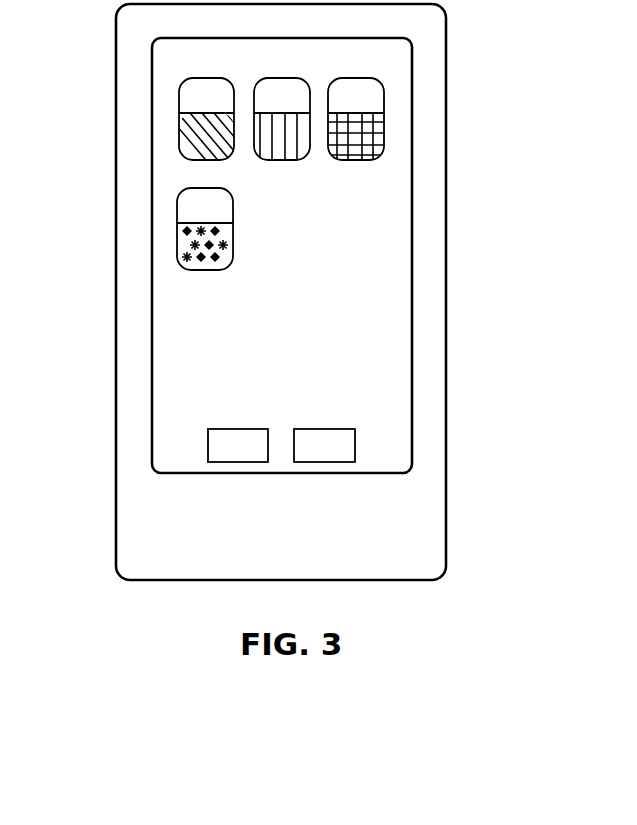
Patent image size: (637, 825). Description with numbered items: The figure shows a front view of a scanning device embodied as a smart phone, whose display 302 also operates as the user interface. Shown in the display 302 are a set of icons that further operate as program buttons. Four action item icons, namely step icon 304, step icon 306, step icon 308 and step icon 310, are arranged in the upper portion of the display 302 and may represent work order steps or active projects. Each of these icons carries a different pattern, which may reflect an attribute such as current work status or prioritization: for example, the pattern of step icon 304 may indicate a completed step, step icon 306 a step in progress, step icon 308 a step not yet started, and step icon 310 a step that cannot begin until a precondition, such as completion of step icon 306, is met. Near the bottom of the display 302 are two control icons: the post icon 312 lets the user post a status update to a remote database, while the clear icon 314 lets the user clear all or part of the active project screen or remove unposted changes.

The display 302 is at (375, 398).
The step icon 304 is at (218, 121).
The step icon 306 is at (282, 119).
The step icon 308 is at (356, 119).
The step icon 310 is at (205, 229).
The post icon 312 is at (238, 445).
The clear icon 314 is at (324, 445).